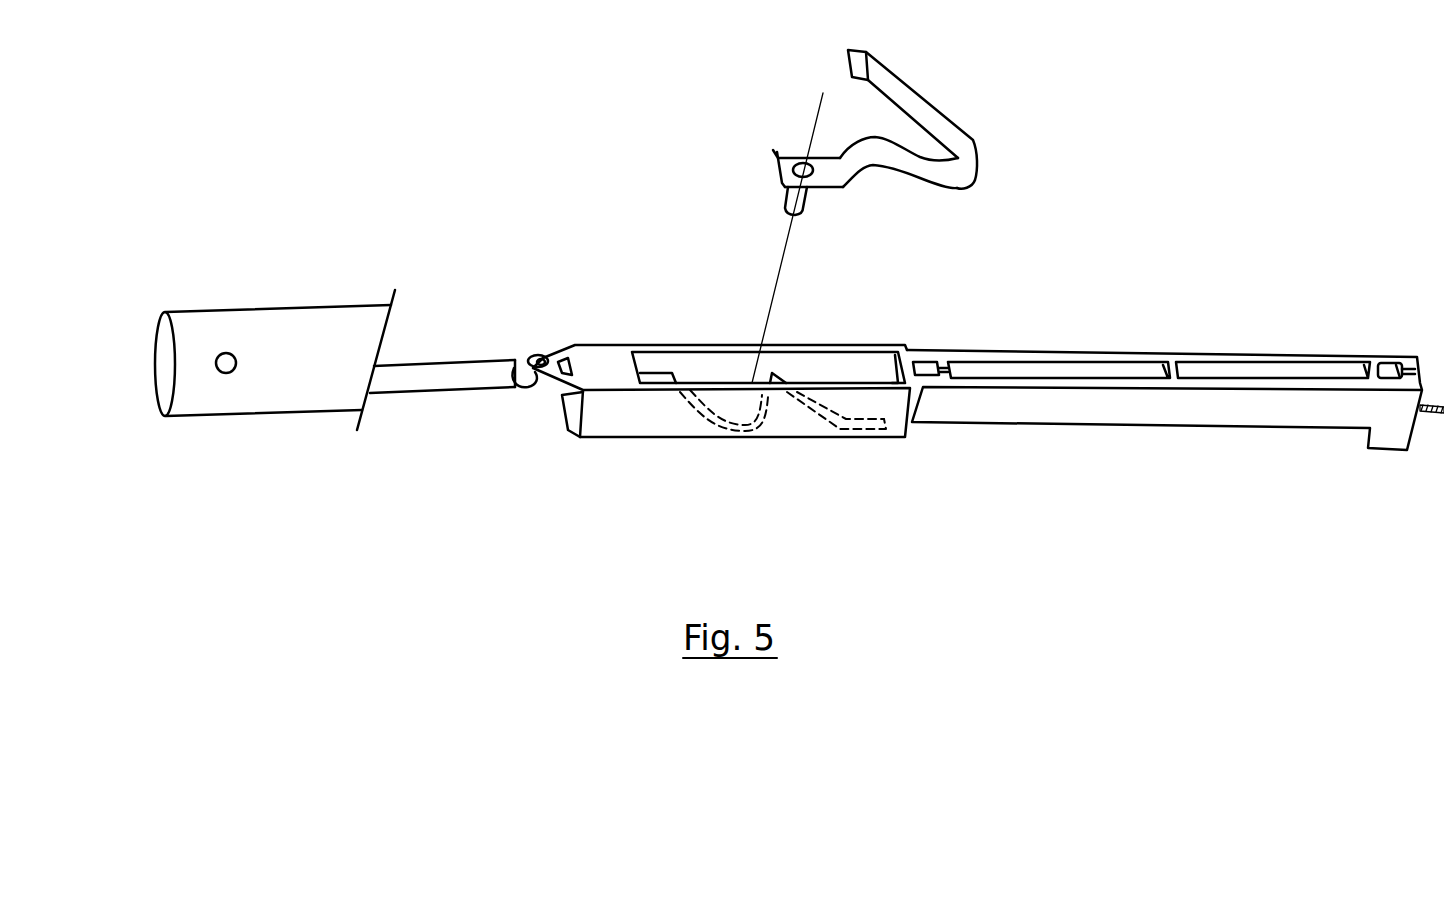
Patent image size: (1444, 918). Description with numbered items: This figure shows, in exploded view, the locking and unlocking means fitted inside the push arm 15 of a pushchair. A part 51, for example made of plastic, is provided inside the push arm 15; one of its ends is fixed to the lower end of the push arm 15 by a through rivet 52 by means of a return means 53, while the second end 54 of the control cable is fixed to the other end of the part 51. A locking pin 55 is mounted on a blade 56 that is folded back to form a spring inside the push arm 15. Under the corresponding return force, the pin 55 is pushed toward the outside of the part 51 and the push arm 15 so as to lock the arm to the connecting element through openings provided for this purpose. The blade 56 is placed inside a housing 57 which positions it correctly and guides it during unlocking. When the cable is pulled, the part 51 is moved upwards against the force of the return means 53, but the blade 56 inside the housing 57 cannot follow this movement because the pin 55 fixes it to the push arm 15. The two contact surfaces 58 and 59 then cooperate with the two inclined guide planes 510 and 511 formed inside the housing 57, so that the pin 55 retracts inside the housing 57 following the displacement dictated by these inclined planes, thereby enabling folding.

The push arm 15 is at (312, 342).
The part 51 is at (1157, 407).
The through rivet 52 is at (220, 372).
The return means 53 is at (423, 378).
The second end of the cable 54 is at (1393, 377).
The locking pin 55 is at (797, 192).
The blade 56 is at (957, 137).
The housing 57 is at (729, 362).
The contact surface 58 is at (903, 177).
The contact surface 59 is at (778, 176).
The inclined guide plane 510 is at (697, 412).
The inclined guide plane 511 is at (807, 412).